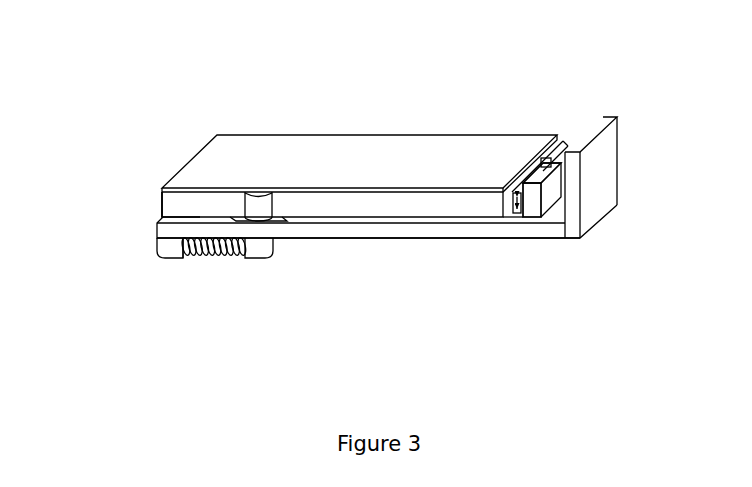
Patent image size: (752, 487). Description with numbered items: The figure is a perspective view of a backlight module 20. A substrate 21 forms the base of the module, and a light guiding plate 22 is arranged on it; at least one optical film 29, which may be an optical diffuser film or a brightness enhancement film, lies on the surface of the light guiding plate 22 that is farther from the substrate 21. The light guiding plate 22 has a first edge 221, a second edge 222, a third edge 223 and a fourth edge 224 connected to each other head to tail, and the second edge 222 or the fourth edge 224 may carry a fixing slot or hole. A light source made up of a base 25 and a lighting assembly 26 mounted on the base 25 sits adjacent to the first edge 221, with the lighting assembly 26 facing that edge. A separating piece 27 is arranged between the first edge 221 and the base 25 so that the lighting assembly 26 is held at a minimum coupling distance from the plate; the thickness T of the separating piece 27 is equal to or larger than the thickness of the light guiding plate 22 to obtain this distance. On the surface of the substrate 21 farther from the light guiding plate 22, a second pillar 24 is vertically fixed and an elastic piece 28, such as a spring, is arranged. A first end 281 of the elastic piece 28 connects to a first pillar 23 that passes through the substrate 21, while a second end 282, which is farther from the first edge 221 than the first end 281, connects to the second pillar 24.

The backlight module 20 is at (387, 383).
The substrate 21 is at (431, 228).
The light guiding plate 22 is at (318, 205).
The first pillar 23 is at (260, 210).
The second pillar 24 is at (172, 249).
The base 25 is at (533, 208).
The lighting assembly 26 is at (569, 250).
The separating piece 27 is at (537, 189).
The elastic piece 28 is at (214, 257).
The optical film 29 is at (343, 152).
The first edge 221 is at (531, 176).
The second edge 222 is at (188, 202).
The third edge 223 is at (160, 207).
The fourth edge 224 is at (559, 144).
The first end 281 is at (248, 256).
The second end 282 is at (183, 257).
The thickness of the separating piece T is at (515, 205).